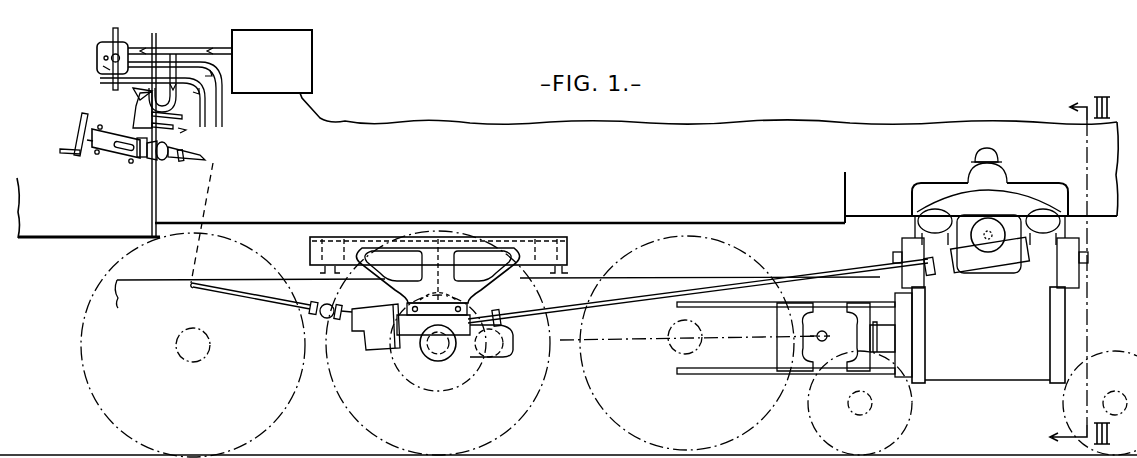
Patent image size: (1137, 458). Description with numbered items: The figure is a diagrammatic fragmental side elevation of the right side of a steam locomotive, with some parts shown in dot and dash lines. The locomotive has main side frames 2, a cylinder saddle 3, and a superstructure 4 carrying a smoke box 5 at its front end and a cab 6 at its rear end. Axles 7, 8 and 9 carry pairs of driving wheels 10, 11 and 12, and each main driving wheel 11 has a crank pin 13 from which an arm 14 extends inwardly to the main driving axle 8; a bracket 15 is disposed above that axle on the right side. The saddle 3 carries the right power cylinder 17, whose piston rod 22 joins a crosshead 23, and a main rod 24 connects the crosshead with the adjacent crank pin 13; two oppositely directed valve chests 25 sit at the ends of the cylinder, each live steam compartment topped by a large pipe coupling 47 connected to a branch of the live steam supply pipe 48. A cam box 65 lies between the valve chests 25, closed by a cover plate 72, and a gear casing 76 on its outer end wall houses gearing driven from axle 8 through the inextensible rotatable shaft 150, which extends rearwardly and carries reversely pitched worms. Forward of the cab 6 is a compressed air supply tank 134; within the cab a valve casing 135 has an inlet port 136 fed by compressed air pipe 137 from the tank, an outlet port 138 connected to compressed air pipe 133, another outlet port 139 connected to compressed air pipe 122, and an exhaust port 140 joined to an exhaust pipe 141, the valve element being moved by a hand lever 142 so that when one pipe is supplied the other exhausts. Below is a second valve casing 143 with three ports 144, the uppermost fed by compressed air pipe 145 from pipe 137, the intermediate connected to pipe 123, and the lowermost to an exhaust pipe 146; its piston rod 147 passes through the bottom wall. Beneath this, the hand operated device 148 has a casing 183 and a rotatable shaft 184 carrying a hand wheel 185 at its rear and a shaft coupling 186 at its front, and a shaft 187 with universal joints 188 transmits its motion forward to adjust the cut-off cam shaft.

The main side frames 2 is at (145, 281).
The cylinder saddle 3 is at (932, 182).
The superstructure 4 is at (636, 197).
The smoke box 5 is at (1087, 146).
The cab 6 is at (57, 228).
The axle 7 is at (677, 347).
The main driving axle 8 is at (436, 351).
The axle 9 is at (183, 352).
The driving wheels 10 is at (620, 420).
The main driving wheels 11 is at (373, 422).
The driving wheels 12 is at (115, 425).
The crank pin 13 is at (498, 353).
The arm 14 is at (469, 353).
The bracket 15 is at (518, 237).
The right power cylinder 17 is at (980, 335).
The piston rod 22 is at (886, 326).
The crosshead 23 is at (824, 324).
The main rod 24 is at (633, 341).
The valve chests 25 is at (912, 246).
The pipe coupling 47 is at (989, 227).
The live steam supply pipe 48 is at (990, 172).
The cam box 65 is at (1006, 271).
The cover plate 72 is at (971, 215).
The gear casing 76 is at (986, 254).
The compressed air pipe 122 is at (210, 128).
The pipe 123 is at (160, 118).
The compressed air pipe 133 is at (224, 108).
The compressed air supply tank 134 is at (312, 63).
The valve casing 135 is at (98, 47).
The inlet port 136 is at (132, 44).
The compressed air pipe 137 is at (212, 47).
The outlet port 138 is at (126, 42).
The outlet port 139 is at (98, 69).
The exhaust port 140 is at (98, 57).
The exhaust pipe 141 is at (112, 88).
The hand lever 142 is at (112, 30).
The valve casing 143 is at (133, 108).
The ports 144 is at (138, 92).
The compressed air pipe 145 is at (172, 69).
The exhaust pipe 146 is at (170, 133).
The piston rod 147 is at (80, 120).
The hand operated device 148 is at (113, 156).
The rotatable shaft 150 is at (603, 307).
The casing 183 is at (100, 145).
The rotatable shaft 184 is at (144, 158).
The hand wheel 185 is at (75, 148).
The shaft coupling 186 is at (158, 160).
The shaft 187 is at (222, 297).
The universal joints 188 is at (200, 163).